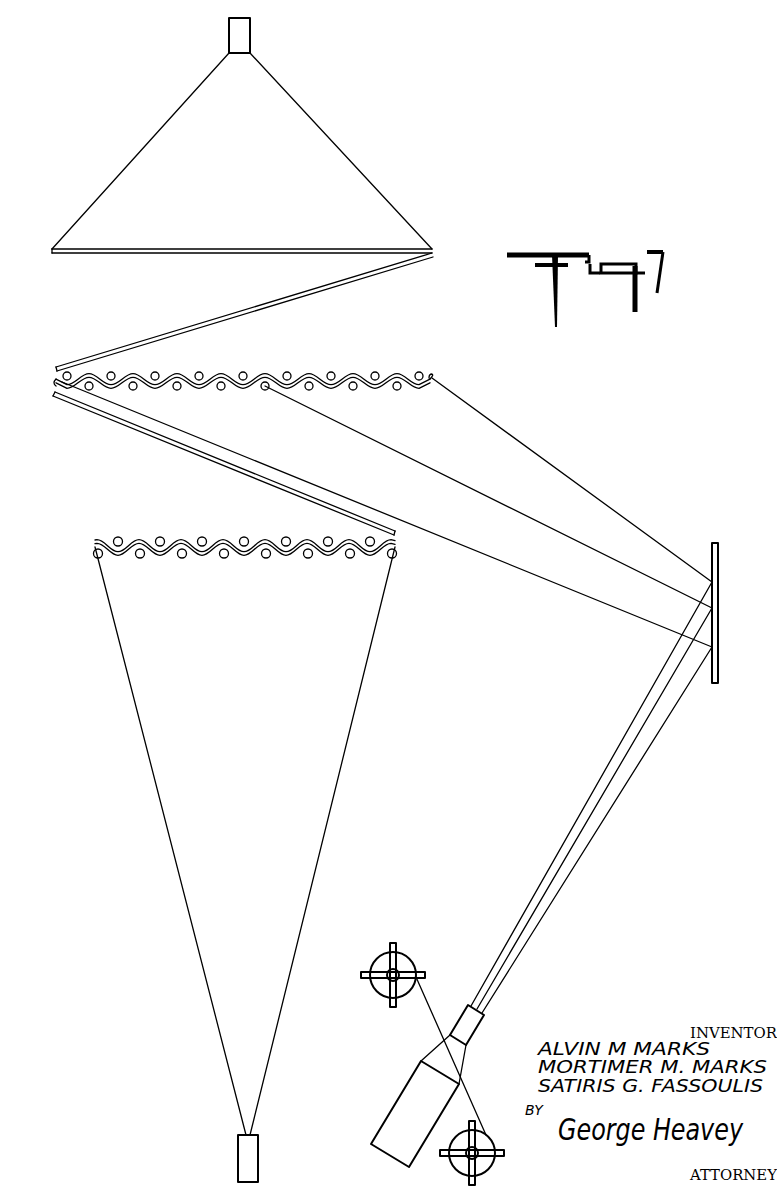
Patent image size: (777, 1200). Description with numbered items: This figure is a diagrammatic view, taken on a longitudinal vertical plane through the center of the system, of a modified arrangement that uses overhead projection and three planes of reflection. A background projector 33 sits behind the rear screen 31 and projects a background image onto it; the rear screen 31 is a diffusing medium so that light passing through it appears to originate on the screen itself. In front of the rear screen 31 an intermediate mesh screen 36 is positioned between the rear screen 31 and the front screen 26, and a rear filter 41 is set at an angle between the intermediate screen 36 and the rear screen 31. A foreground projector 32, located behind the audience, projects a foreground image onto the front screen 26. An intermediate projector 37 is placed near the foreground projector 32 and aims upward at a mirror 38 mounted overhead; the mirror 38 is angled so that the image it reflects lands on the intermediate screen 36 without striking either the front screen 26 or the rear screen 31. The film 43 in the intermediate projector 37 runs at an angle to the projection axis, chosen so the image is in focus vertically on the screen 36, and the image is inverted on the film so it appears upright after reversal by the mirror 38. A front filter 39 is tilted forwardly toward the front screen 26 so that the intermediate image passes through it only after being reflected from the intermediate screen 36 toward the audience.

The background projector 33 is at (247, 38).
The rear screen 31 is at (368, 248).
The rear filter 41 is at (237, 314).
The intermediate mesh screen 36 is at (56, 378).
The front filter 39 is at (129, 425).
The front screen 26 is at (143, 537).
The mirror 38 is at (716, 620).
The foreground projector 32 is at (256, 1158).
The intermediate projector 37 is at (396, 1109).
The film 43 is at (478, 1096).